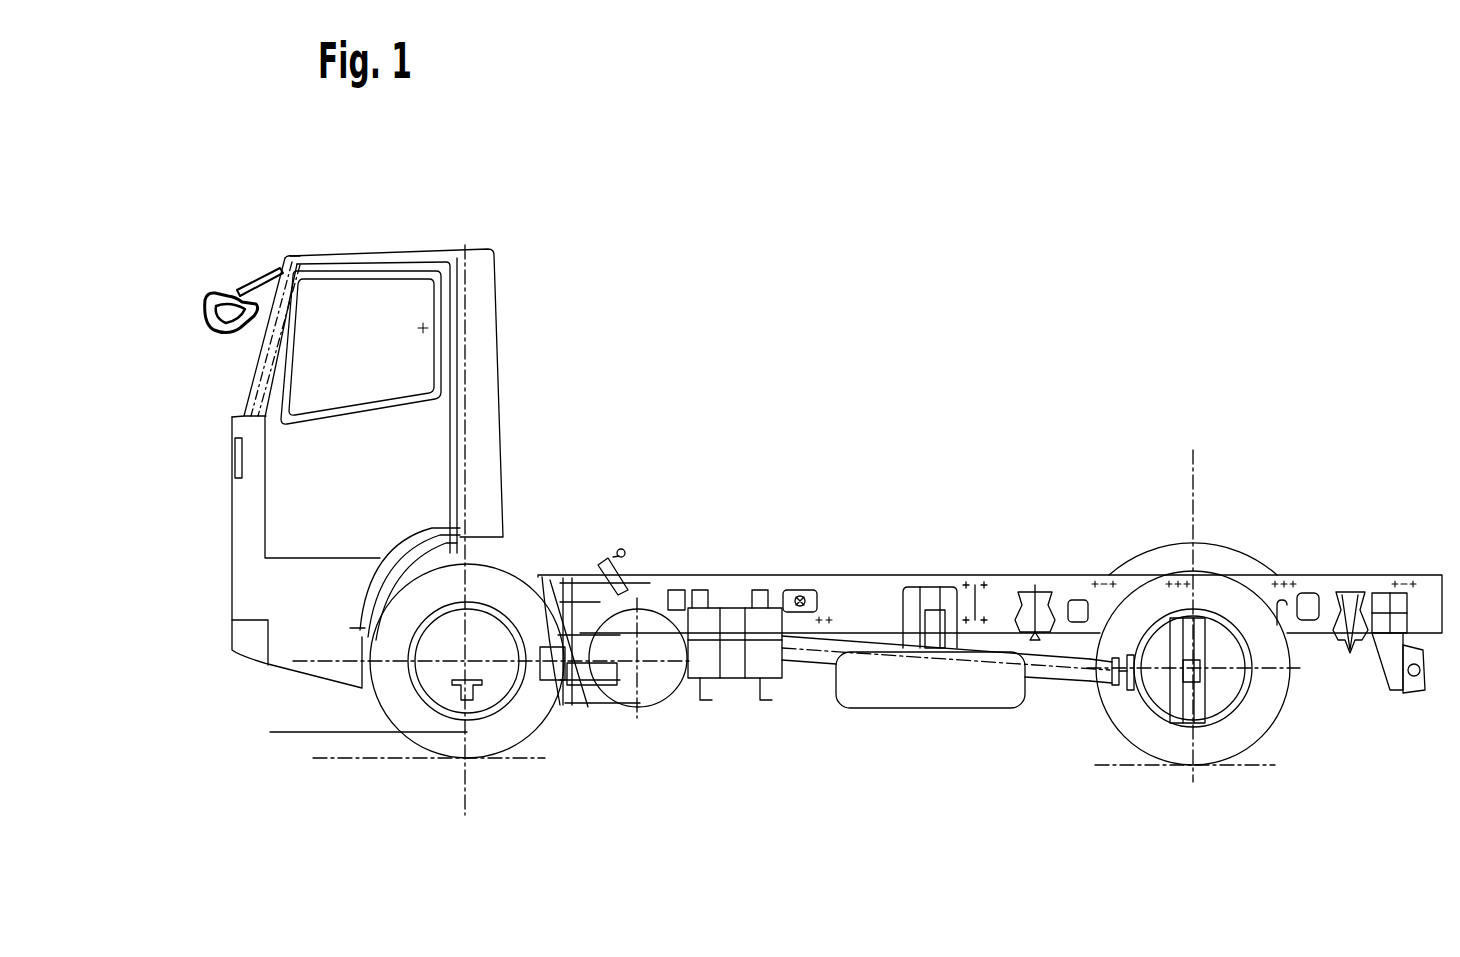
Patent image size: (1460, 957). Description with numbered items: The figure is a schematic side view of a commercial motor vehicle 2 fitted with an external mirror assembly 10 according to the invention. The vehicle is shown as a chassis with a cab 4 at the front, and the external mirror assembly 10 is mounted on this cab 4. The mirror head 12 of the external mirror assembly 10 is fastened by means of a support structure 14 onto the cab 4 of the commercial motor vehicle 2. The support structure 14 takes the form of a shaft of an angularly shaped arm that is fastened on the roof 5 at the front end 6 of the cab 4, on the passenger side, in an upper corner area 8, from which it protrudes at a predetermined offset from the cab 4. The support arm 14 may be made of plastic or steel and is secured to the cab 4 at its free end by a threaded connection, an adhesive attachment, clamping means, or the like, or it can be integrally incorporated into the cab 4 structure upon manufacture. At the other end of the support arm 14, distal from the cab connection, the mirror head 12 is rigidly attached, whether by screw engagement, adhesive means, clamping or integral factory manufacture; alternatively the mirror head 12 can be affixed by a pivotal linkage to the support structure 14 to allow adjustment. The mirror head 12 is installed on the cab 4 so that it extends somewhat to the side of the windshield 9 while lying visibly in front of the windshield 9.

The commercial motor vehicle 2 is at (594, 797).
The cab 4 is at (493, 301).
The roof 5 is at (392, 249).
The front end 6 is at (230, 503).
The upper corner area 8 is at (290, 257).
The windshield 9 is at (247, 377).
The external mirror assembly 10 is at (186, 276).
The mirror head 12 is at (205, 330).
The support structure 14 is at (250, 275).